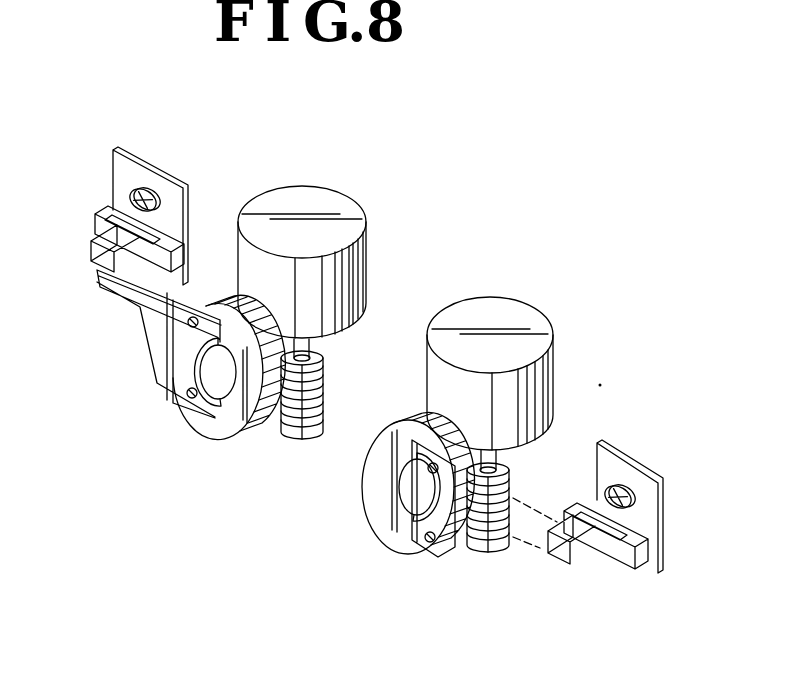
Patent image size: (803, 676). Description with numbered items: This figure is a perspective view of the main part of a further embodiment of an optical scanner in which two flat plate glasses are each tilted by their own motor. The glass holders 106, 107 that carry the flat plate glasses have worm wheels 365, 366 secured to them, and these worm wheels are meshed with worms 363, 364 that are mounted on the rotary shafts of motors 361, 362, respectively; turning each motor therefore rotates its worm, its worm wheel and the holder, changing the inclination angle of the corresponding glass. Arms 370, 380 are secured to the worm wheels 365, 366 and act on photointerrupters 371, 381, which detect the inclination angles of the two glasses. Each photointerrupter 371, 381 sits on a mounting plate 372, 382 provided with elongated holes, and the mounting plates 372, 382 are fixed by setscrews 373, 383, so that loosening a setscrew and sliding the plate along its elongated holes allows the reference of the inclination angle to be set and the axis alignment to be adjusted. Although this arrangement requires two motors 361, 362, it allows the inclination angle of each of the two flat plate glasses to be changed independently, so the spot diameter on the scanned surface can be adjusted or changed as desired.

The glass holding rod 106 is at (226, 385).
The glass holding rod 107 is at (405, 493).
The motor 361 is at (326, 186).
The motor 362 is at (545, 308).
The worm 363 is at (325, 372).
The worm 364 is at (513, 480).
The worm wheel 365 is at (210, 430).
The worm wheel 366 is at (364, 474).
The arm 370 is at (150, 342).
The photointerrupter 371 is at (107, 213).
The mounting plate 372 is at (142, 162).
The setscrew 373 is at (157, 193).
The arm 380 is at (412, 545).
The photointerrupter 381 is at (648, 578).
The mounting plate 382 is at (666, 508).
The setscrew 383 is at (627, 480).